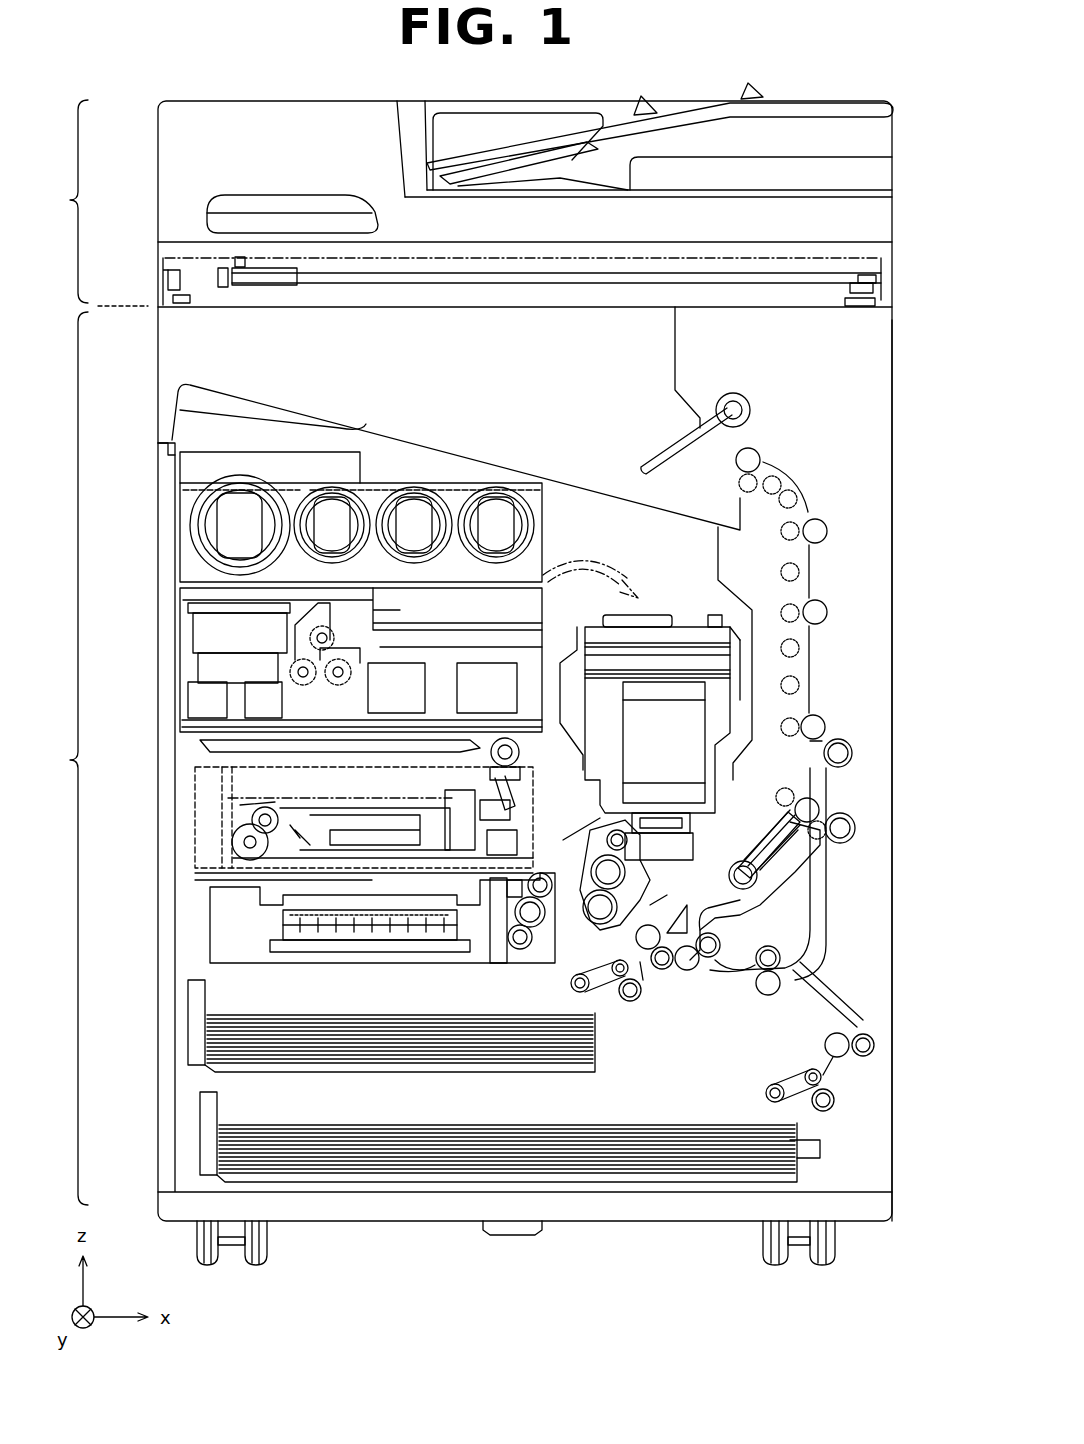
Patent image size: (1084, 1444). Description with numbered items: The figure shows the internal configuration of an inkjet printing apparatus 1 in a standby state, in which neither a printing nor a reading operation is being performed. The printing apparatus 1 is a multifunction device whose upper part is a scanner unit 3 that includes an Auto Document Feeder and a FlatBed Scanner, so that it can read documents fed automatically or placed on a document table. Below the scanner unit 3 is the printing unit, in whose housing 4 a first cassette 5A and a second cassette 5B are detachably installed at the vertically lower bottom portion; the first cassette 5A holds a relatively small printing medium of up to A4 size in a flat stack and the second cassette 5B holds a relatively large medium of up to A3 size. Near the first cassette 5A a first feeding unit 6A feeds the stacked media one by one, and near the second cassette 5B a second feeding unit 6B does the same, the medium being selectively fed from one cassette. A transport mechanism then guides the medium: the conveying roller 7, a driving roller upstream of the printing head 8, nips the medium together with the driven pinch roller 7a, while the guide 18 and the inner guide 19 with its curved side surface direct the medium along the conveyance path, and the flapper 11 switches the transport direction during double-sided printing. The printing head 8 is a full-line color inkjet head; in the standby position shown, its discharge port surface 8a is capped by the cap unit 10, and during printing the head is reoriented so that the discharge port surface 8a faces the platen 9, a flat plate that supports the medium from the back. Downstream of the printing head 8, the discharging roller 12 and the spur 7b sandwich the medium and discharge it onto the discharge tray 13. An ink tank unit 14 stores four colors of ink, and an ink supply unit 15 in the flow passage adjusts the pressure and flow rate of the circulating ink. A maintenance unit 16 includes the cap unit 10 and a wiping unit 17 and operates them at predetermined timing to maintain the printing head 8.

The inkjet printing apparatus 1 is at (843, 79).
The scanner unit 3 is at (467, 195).
The housing 4 is at (892, 393).
The first cassette 5A is at (195, 1030).
The second cassette 5B is at (207, 1143).
The first feeding unit 6A is at (637, 1000).
The second feeding unit 6B is at (835, 1100).
The conveying roller 7 is at (795, 812).
The pinch roller 7a is at (668, 968).
The spur 7b is at (805, 650).
The printing head 8 is at (690, 724).
The discharge port surface 8a is at (790, 847).
The platen 9 is at (758, 870).
The cap unit 10 is at (757, 887).
The flapper 11 is at (815, 692).
The discharging roller 12 is at (755, 455).
The discharge tray 13 is at (455, 460).
The ink tank unit 14 is at (180, 492).
The ink supply unit 15 is at (190, 668).
The maintenance unit 16 is at (210, 917).
The wiping unit 17 is at (205, 790).
The guide 18 is at (808, 572).
The inner guide 19 is at (787, 940).